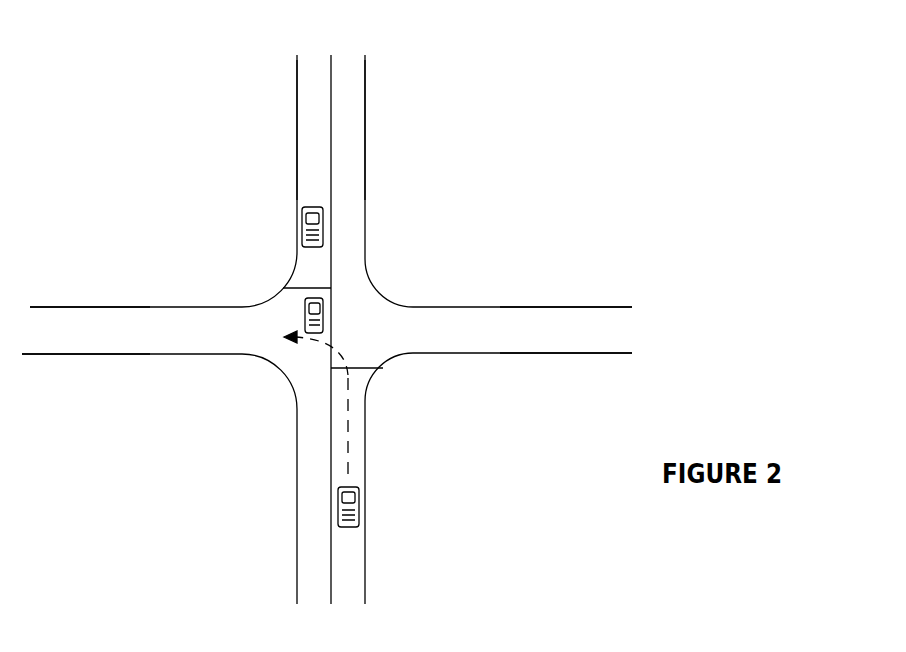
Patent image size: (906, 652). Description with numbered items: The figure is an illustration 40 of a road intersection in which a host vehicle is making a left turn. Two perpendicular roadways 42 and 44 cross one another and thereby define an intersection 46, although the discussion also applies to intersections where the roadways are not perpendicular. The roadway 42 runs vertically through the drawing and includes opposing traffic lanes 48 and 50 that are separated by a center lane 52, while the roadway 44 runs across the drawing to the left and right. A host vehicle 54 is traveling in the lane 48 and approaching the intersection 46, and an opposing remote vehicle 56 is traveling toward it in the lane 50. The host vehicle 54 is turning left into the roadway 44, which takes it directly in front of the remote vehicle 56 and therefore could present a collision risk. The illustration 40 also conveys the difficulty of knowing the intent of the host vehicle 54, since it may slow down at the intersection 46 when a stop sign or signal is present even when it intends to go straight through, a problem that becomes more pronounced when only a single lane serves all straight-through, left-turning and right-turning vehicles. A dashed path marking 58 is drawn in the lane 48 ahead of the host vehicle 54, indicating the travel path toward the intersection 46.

The illustration 40 is at (383, 329).
The roadway 42 is at (292, 189).
The roadway 44 is at (163, 322).
The intersection 46 is at (408, 380).
The traffic lane 48 is at (346, 105).
The traffic lane 50 is at (306, 136).
The center lane 52 is at (333, 268).
The host vehicle 54 is at (350, 518).
The remote vehicle 56 is at (300, 222).
The dashed lane marking / turn path 58 is at (347, 410).